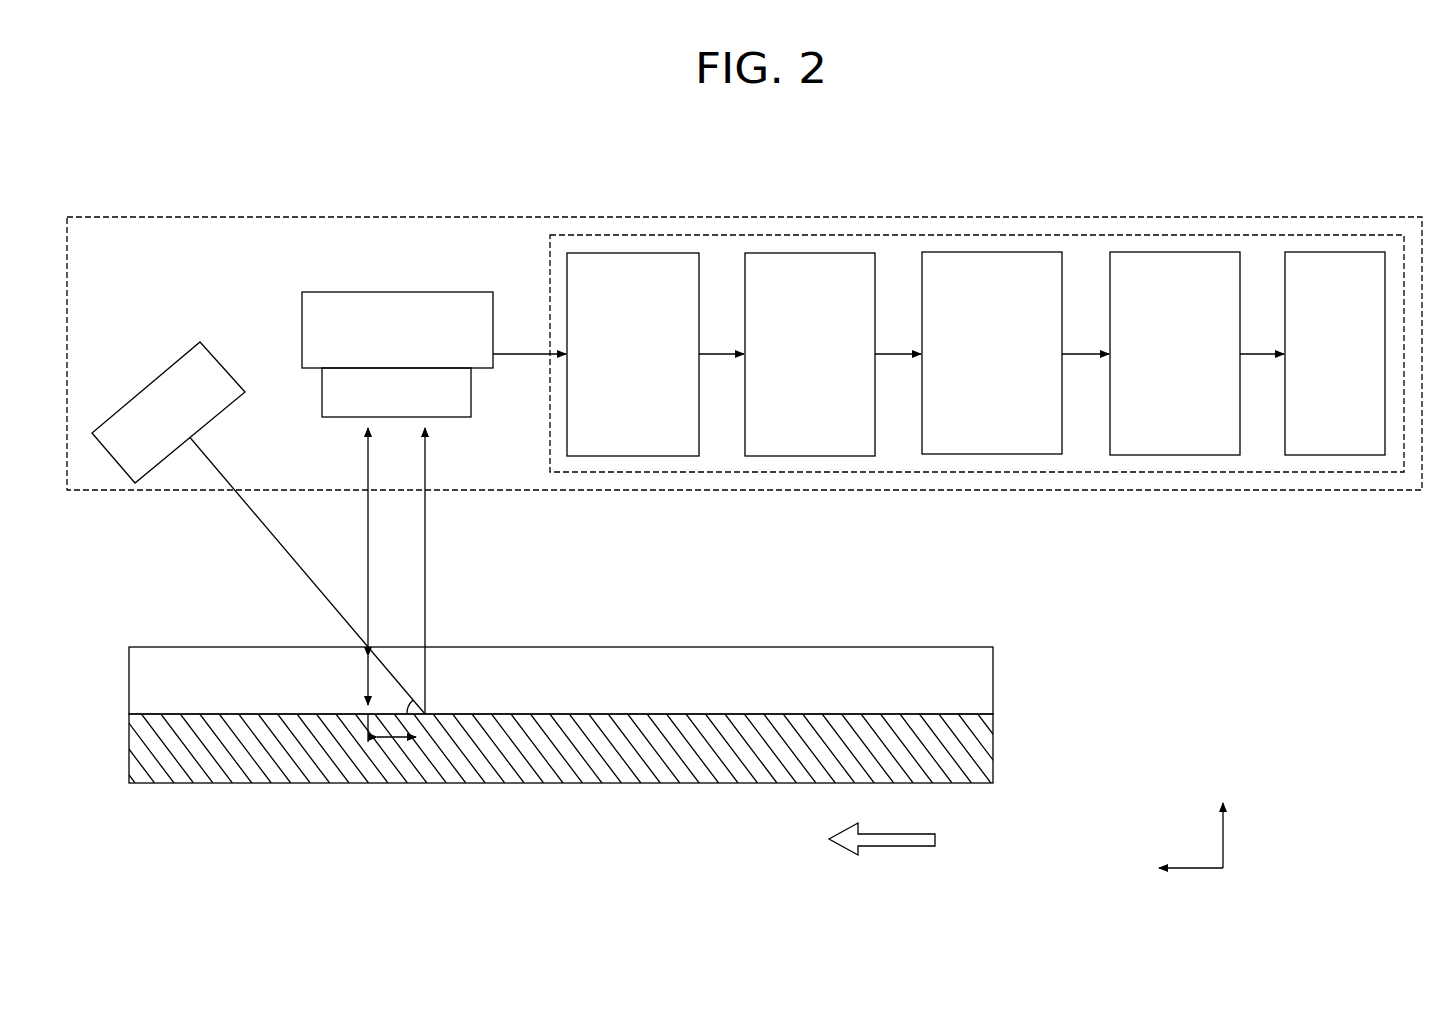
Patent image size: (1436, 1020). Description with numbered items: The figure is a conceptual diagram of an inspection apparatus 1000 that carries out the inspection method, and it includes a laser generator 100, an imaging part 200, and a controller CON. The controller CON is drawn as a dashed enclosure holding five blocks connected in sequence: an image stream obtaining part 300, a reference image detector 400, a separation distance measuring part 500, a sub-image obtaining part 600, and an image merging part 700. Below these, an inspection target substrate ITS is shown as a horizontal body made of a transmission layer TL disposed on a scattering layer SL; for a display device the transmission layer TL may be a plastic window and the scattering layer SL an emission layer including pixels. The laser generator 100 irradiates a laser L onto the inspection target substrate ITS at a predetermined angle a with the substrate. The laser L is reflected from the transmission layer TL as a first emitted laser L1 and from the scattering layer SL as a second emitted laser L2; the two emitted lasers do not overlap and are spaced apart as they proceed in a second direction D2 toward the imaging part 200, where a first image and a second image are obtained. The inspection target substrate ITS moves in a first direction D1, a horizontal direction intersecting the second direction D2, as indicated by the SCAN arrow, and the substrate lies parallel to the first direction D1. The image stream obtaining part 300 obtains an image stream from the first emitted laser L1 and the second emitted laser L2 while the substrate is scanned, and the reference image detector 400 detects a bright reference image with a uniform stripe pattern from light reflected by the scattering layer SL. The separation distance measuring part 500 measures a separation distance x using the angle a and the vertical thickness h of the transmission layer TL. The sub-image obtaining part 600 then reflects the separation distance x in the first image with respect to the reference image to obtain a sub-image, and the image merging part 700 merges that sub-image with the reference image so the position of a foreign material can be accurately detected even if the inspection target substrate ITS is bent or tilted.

The inspection apparatus 1000 is at (1404, 188).
The laser generator 100 is at (148, 386).
The imaging part 200 is at (398, 291).
The image stream obtaining part 300 is at (608, 252).
The reference image detector 400 is at (805, 252).
The separation distance measuring part 500 is at (985, 251).
The sub-image obtaining part 600 is at (1165, 251).
The image merging part 700 is at (1328, 251).
The controller CON is at (1352, 173).
The inspection target substrate ITS is at (594, 715).
The transmission layer TL is at (993, 680).
The scattering layer SL is at (570, 748).
The laser L is at (277, 545).
The first emitted laser L1 is at (368, 533).
The second emitted laser L2 is at (425, 572).
The vertical thickness h is at (358, 680).
The angle a is at (400, 701).
The separation distance x is at (392, 735).
The scan direction SCAN is at (882, 852).
The first direction D1 is at (1173, 868).
The second direction D2 is at (1222, 820).